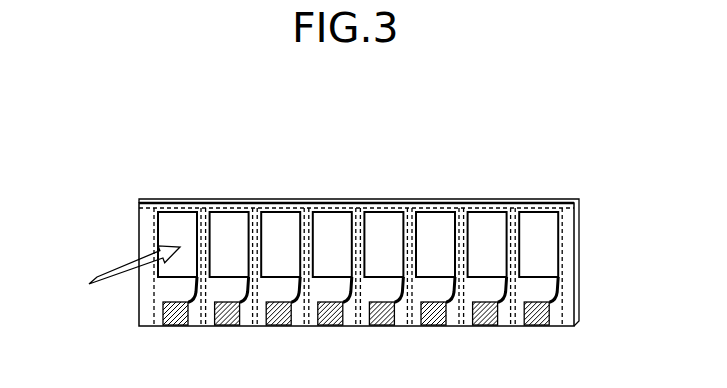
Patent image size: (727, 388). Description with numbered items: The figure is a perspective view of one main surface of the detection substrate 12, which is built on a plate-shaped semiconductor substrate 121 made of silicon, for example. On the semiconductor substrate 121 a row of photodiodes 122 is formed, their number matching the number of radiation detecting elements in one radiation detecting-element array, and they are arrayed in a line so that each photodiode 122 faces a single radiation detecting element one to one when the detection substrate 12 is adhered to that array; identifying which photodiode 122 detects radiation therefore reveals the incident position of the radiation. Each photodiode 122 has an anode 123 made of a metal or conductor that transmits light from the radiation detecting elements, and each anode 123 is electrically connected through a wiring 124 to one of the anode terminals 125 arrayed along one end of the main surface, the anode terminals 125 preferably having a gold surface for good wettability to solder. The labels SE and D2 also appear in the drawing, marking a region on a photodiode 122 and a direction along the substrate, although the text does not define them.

The detection substrate 12 is at (123, 131).
The semiconductor substrate 121 is at (581, 252).
The photodiode 122 is at (176, 202).
The anode 123 is at (160, 279).
The wiring 124 is at (197, 292).
The anode terminal 125 is at (171, 326).
The sensor element SE is at (168, 228).
The direction D2 is at (108, 270).